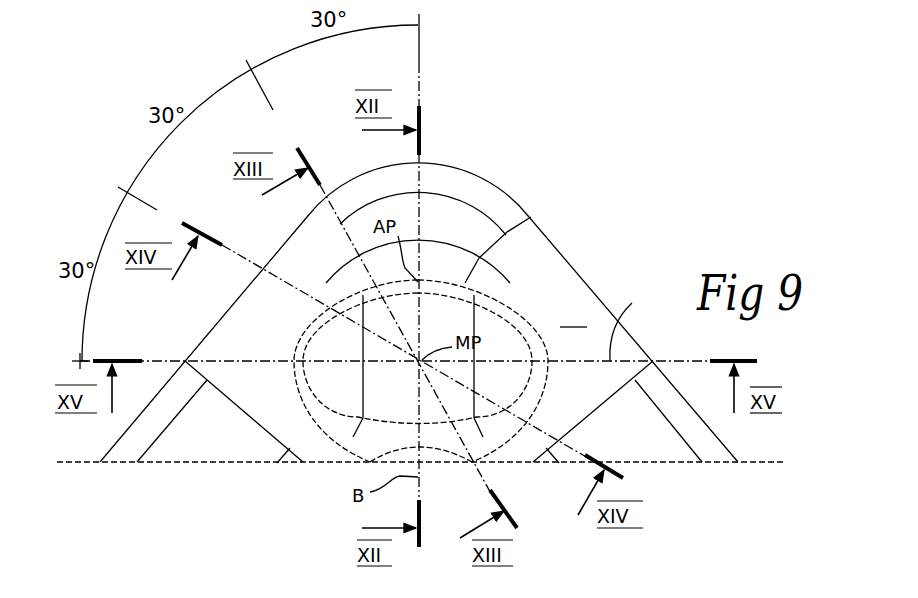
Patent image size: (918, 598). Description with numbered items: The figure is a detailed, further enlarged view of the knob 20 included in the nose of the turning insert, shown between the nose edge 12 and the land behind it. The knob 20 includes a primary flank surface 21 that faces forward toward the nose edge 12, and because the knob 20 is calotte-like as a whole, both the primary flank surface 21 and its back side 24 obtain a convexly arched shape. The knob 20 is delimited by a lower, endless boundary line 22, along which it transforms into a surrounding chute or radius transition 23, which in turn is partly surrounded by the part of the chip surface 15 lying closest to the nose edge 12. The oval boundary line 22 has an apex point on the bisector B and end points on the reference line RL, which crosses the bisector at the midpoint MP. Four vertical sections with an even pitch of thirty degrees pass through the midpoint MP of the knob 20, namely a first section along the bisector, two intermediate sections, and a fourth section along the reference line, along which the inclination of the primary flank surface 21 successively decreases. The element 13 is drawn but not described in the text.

The nose edge 12 is at (464, 164).
The base / bottom face 13 is at (113, 445).
The chip surface 15 is at (633, 339).
The knob 20 is at (514, 310).
The primary flank surface 21 is at (460, 321).
The lower endless boundary line 22 is at (350, 307).
The radius transition 23 is at (460, 280).
The back side 24 is at (408, 408).